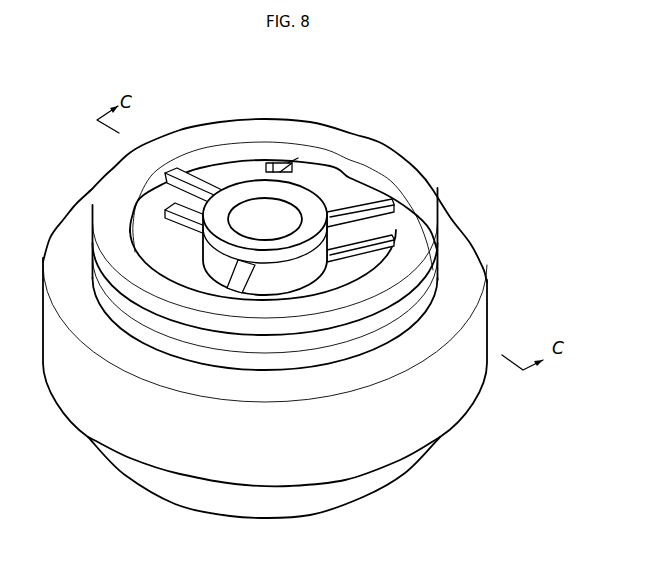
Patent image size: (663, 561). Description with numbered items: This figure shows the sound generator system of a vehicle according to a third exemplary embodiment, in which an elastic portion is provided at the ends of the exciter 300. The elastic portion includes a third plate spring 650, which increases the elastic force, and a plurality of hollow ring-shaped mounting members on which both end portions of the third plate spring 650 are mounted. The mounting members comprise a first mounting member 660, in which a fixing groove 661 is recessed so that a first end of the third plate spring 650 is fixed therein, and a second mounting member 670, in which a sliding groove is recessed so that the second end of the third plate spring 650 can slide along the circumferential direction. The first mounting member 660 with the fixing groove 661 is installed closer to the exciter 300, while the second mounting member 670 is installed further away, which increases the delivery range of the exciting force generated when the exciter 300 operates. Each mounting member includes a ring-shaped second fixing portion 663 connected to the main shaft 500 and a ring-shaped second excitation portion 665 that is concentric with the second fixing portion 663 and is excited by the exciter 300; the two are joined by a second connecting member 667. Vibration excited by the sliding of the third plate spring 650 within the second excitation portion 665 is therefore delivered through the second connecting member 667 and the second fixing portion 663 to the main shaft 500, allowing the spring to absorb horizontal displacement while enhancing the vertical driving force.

The exciter 300 is at (500, 323).
The main shaft 500 is at (247, 217).
The third plate spring 650 is at (281, 163).
The first mounting member 660 is at (440, 267).
The fixing groove 661 is at (270, 163).
The second fixing portion 663 is at (302, 197).
The second excitation portion 665 is at (123, 190).
The second connecting member 667 is at (370, 207).
The second mounting member 670 is at (440, 210).